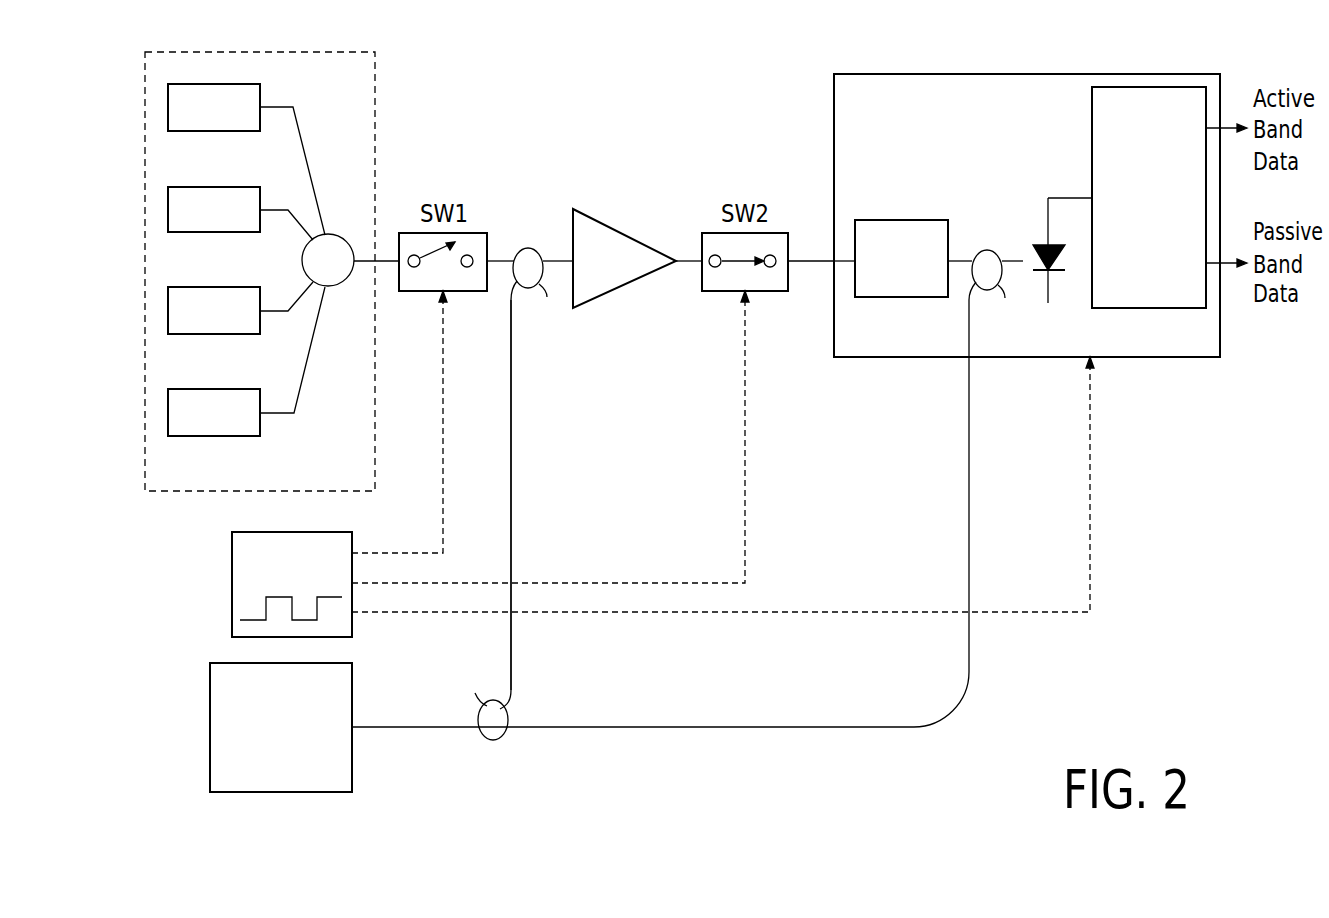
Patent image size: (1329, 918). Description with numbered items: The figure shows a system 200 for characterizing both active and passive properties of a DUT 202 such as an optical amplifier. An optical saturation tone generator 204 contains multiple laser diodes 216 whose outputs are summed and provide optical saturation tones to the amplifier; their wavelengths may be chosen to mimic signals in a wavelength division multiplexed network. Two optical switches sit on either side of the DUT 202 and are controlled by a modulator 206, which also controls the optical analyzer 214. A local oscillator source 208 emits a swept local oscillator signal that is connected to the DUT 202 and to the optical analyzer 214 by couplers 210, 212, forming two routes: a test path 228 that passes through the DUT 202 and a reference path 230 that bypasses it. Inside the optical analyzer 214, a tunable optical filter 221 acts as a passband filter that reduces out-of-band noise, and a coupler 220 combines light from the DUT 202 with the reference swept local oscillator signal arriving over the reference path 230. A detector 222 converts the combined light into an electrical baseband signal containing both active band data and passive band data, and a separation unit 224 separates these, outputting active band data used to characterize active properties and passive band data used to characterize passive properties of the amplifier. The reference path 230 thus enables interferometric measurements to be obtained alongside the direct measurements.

The system 200 is at (1185, 660).
The DUT 202 is at (610, 296).
The optical saturation tone generator 204 is at (375, 68).
The modulator 206 is at (232, 593).
The local oscillator source 208 is at (210, 738).
The coupler 210 is at (497, 742).
The coupler 212 is at (528, 247).
The optical analyzer 214 is at (834, 93).
The laser diodes 216 is at (188, 131).
The coupler 220 is at (987, 249).
The tunable optical filter 221 is at (903, 220).
The detector 222 is at (1058, 262).
The separation unit 224 is at (1150, 309).
The test path 228 is at (686, 262).
The reference path 230 is at (718, 727).